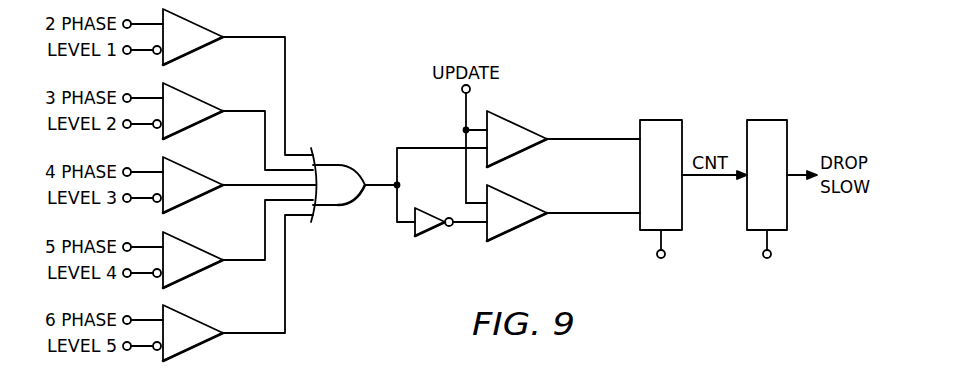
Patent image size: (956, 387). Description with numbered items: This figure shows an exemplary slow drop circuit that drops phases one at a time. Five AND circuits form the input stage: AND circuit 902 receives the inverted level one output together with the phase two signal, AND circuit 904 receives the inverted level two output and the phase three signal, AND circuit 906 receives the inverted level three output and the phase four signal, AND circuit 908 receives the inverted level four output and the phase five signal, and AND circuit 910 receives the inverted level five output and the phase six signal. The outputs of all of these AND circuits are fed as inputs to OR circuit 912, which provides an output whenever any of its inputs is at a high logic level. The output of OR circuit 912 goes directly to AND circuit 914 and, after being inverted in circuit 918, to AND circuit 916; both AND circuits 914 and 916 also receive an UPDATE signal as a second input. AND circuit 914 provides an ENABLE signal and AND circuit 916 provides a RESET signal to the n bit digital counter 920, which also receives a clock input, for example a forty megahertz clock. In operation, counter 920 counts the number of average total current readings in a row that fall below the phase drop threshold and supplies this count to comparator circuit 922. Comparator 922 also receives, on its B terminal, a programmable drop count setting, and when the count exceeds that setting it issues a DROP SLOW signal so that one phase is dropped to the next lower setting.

The AND circuit 902 is at (195, 50).
The AND circuit 904 is at (195, 124).
The AND circuit 906 is at (195, 198).
The AND circuit 908 is at (195, 273).
The AND circuit 910 is at (195, 346).
The OR circuit 912 is at (348, 206).
The AND circuit 914 is at (518, 125).
The AND circuit 916 is at (520, 226).
The inverter circuit 918 is at (438, 227).
The n bit digital counter 920 is at (666, 120).
The comparator circuit 922 is at (772, 120).